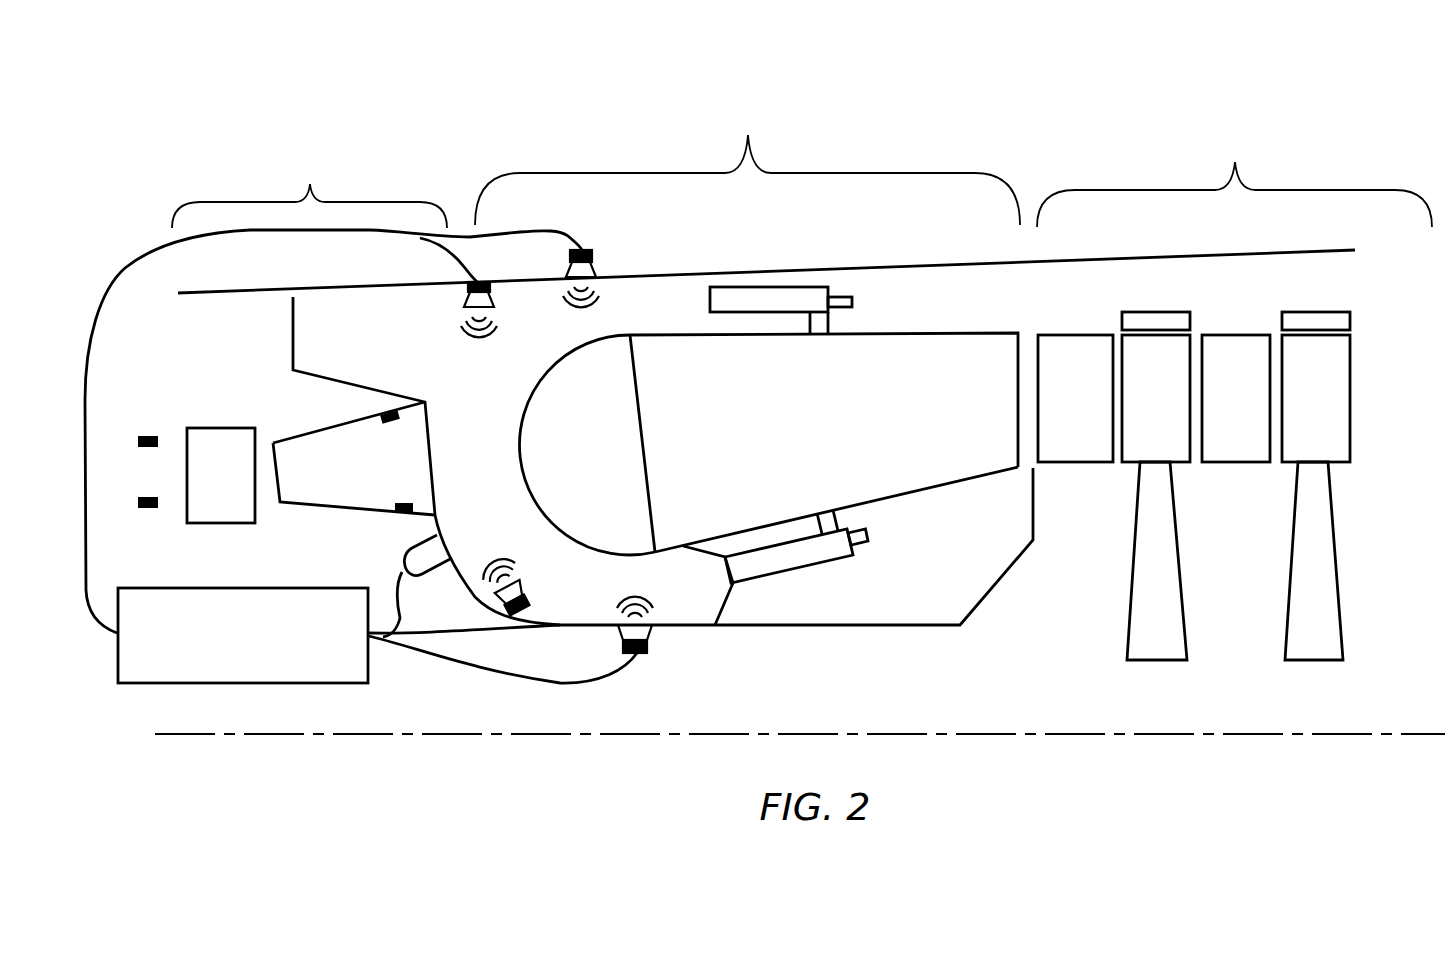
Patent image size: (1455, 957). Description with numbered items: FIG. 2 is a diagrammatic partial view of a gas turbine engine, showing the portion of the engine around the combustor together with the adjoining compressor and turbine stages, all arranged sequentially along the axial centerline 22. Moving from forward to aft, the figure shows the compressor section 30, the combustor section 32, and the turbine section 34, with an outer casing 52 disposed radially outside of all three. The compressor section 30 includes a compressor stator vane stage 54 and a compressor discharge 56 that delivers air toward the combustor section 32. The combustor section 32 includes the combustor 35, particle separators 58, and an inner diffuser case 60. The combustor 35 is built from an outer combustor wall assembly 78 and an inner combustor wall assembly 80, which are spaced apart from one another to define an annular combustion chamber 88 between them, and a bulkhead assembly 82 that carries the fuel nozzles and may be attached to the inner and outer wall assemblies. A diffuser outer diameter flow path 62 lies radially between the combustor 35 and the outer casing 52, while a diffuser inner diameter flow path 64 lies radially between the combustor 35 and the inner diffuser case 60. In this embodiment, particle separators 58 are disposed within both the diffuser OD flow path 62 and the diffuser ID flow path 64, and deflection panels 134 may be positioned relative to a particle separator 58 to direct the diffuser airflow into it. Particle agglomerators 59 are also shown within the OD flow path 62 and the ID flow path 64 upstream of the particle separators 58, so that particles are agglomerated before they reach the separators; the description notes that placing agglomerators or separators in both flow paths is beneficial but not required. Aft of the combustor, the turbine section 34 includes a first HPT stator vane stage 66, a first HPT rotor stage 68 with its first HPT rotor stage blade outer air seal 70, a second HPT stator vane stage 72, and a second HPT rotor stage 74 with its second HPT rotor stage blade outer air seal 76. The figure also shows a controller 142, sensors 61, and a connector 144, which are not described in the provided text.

The axial centerline 22 is at (1374, 734).
The compressor section 30 is at (309, 191).
The combustor section 32 is at (747, 165).
The turbine section 34 is at (1234, 178).
The combustor 35 is at (904, 314).
The outer casing 52 is at (330, 288).
The compressor stator vane stage 54 is at (206, 488).
The compressor discharge 56 is at (320, 480).
The particle separator 58 is at (801, 273).
The particle agglomerator 59 is at (487, 282).
The inner diffuser case 60 is at (543, 625).
The sensor 61 is at (147, 496).
The diffuser outer diameter (OD) flow path 62 is at (645, 318).
The diffuser inner diameter (ID) flow path 64 is at (878, 603).
The first HPT stator vane stage 66 is at (1057, 408).
The first HPT rotor stage 68 is at (1137, 408).
The first HPT rotor stage blade outer air seal (BOAS) 70 is at (1158, 312).
The second HPT stator vane stage 72 is at (1221, 408).
The second HPT rotor stage 74 is at (1297, 408).
The second HPT rotor stage BOAS 76 is at (1325, 312).
The outer combustor wall assembly 78 is at (964, 319).
The inner combustor wall assembly 80 is at (930, 505).
The bulkhead assembly 82 is at (542, 507).
The annular combustion chamber 88 is at (790, 433).
The deflection panel 134 is at (722, 603).
The controller 142 is at (226, 663).
The connector lobe 144 is at (413, 548).